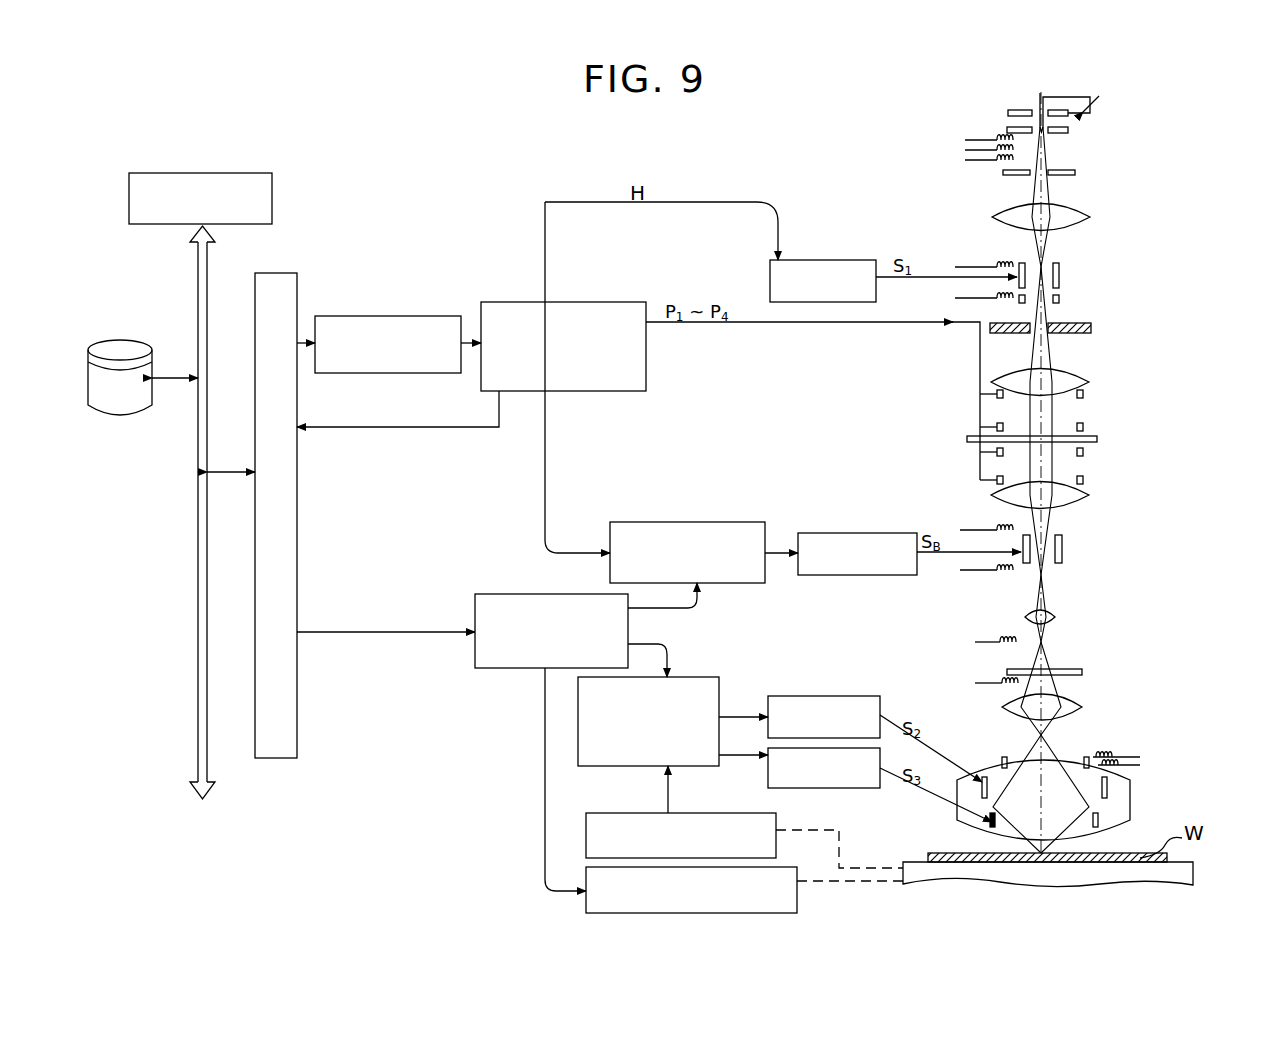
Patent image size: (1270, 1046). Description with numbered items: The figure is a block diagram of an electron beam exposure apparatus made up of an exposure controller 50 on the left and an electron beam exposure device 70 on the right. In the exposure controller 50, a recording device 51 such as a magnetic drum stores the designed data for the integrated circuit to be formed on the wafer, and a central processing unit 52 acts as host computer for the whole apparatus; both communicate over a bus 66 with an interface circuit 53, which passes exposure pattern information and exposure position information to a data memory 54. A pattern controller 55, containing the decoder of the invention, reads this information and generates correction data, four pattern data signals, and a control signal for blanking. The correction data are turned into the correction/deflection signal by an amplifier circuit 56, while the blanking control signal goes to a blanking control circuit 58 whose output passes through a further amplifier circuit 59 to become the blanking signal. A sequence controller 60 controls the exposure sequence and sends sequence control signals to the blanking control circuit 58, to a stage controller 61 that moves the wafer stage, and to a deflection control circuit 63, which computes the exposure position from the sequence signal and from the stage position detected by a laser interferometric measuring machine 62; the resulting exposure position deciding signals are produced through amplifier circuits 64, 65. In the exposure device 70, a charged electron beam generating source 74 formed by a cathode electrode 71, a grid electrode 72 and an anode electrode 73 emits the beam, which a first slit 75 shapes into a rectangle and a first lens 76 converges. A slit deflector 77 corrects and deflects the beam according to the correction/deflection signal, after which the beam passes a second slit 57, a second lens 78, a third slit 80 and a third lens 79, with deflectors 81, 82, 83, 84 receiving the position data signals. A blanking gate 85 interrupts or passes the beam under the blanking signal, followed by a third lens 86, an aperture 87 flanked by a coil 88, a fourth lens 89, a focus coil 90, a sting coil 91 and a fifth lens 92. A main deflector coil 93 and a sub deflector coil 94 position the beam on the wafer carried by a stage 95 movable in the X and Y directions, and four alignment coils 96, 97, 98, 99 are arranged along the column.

The exposure controller 50 is at (535, 185).
The recording device 51 is at (142, 348).
The central processing unit 52 is at (242, 173).
The interface circuit 53 is at (290, 275).
The data memory 54 is at (393, 318).
The pattern controller 55 is at (584, 302).
The amplifier circuit 56 is at (809, 261).
The second slit 57 is at (1091, 326).
The blanking control circuit 58 is at (680, 523).
The amplifier circuit 59 is at (873, 533).
The sequence controller 60 is at (510, 594).
The stage controller 61 is at (586, 874).
The laser interferometric measuring machine 62 is at (650, 813).
The deflection control circuit 63 is at (702, 677).
The DAC/AMP 64 is at (825, 696).
The DAC/AMP 65 is at (860, 788).
The bus 66 is at (202, 800).
The electron beam exposure device 70 is at (907, 207).
The cathode electrode 71 is at (1040, 93).
The grid electrode 72 is at (1008, 112).
The anode electrode 73 is at (1007, 130).
The charged electron beam generating source 74 is at (1100, 112).
The first slit 75 is at (1075, 172).
The first lens 76 is at (1088, 217).
The slit deflector 77 is at (1059, 276).
The second lens 78 is at (1080, 372).
The third lens 79 is at (1075, 507).
The third slit 80 is at (1105, 438).
The deflector 81 is at (1083, 394).
The deflector 82 is at (1083, 427).
The deflector 83 is at (1083, 452).
The deflector 84 is at (1083, 480).
The blanking gate 85 is at (1062, 550).
The third lens 86 is at (1055, 614).
The aperture 87 is at (1082, 671).
The coil 88 is at (975, 683).
The fourth lens 89 is at (1082, 705).
The focus coil 90 is at (1140, 757).
The sting coil 91 is at (1140, 765).
The fifth lens 92 is at (1130, 800).
The main deflector coil 93 is at (982, 777).
The sub deflector coil 94 is at (990, 823).
The stage 95 is at (1193, 873).
The alignment coil 96 is at (958, 152).
The alignment coil 97 is at (970, 300).
The alignment coil 98 is at (966, 572).
The alignment coil 99 is at (980, 642).